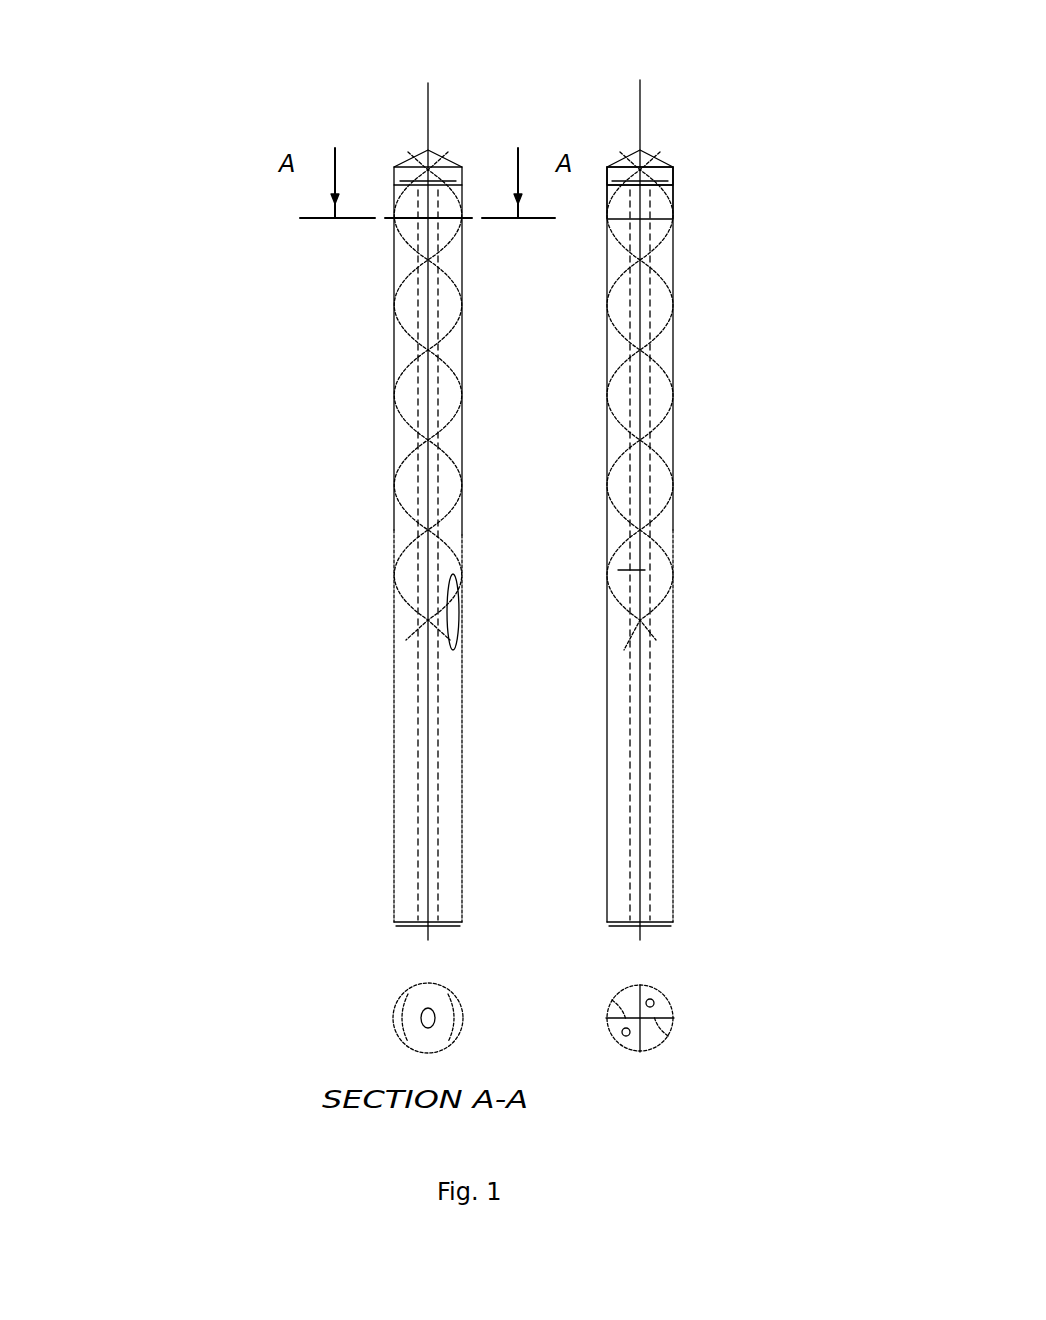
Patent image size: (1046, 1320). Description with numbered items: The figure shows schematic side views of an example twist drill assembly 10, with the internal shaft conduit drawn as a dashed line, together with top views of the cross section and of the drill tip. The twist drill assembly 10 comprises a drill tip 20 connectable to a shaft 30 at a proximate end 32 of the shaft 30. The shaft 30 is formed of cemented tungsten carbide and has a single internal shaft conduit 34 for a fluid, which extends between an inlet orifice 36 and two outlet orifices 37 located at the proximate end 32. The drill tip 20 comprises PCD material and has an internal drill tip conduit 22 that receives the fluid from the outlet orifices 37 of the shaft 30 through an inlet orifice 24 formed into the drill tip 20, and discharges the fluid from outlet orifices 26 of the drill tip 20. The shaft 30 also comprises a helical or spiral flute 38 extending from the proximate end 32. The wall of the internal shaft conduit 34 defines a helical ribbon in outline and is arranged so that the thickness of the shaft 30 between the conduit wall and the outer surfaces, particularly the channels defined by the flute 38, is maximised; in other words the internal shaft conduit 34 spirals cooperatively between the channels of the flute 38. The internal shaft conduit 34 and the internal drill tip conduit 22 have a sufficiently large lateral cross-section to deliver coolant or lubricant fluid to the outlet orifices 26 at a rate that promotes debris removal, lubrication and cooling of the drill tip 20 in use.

The twist drill assembly 10 is at (228, 207).
The drill tip 20 is at (428, 148).
The internal drill tip conduit 22 is at (440, 178).
The inlet orifice 24 is at (648, 176).
The outlet orifices 26 is at (645, 172).
The shaft 30 is at (394, 683).
The proximate end 32 is at (672, 185).
The internal shaft conduit 34 is at (418, 440).
The inlet orifice 36 is at (415, 928).
The outlet orifices 37 is at (420, 178).
The flute 38 is at (408, 527).